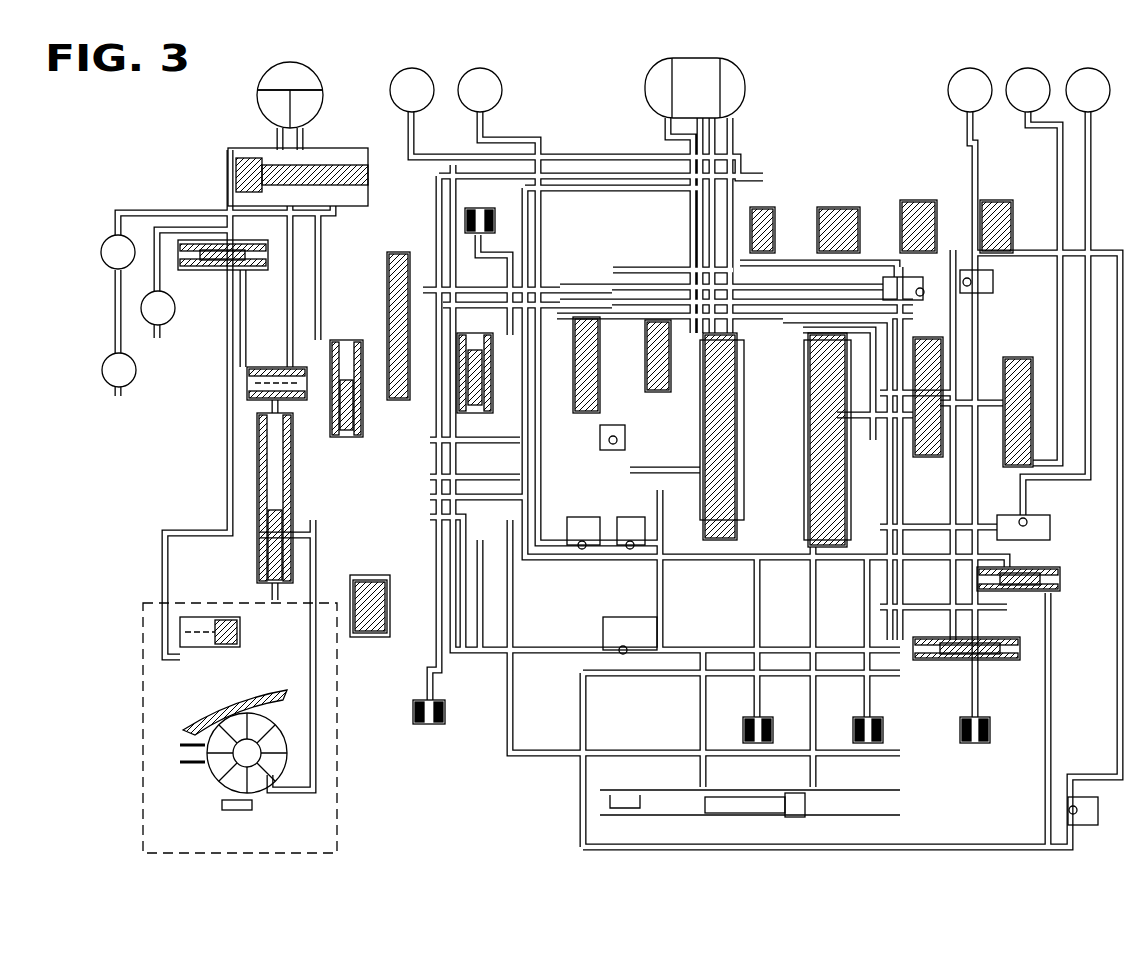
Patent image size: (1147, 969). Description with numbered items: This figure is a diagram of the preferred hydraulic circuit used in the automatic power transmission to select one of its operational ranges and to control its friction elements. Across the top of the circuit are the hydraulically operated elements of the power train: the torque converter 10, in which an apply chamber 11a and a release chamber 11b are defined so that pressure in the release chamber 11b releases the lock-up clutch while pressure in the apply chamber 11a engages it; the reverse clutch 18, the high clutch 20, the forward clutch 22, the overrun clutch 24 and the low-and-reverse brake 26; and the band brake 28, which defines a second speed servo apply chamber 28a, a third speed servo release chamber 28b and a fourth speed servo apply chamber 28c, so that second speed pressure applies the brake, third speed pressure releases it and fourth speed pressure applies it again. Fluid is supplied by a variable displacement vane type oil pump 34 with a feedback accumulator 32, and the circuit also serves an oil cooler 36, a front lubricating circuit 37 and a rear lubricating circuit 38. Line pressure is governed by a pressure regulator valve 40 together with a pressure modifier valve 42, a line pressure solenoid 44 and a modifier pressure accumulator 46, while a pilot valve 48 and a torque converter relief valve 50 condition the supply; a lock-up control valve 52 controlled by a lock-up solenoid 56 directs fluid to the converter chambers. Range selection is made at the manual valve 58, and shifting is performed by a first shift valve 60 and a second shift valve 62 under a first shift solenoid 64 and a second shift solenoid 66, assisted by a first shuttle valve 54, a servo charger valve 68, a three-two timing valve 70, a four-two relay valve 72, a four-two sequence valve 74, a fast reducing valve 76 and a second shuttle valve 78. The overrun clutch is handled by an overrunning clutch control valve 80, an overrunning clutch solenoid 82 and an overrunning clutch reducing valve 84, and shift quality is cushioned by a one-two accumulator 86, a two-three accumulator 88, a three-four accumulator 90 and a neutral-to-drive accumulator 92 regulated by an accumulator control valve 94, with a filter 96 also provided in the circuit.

The torque converter 10 is at (316, 63).
The apply chamber 11a is at (322, 108).
The release chamber 11b is at (258, 106).
The reverse clutch 18 is at (418, 70).
The high clutch 20 is at (485, 70).
The forward clutch 22 is at (980, 70).
The overrun clutch 24 is at (1038, 70).
The low-and-reverse brake 26 is at (1098, 70).
The band brake 28 is at (703, 69).
The second speed servo apply chamber 28a is at (645, 86).
The third speed servo release chamber 28b is at (695, 58).
The fourth speed servo apply chamber 28c is at (752, 88).
The feedback accumulator 32 is at (248, 640).
The variable displacement vane type oil pump 34 is at (217, 790).
The oil cooler 36 is at (100, 252).
The front lubricating circuit 37 is at (166, 322).
The rear lubricating circuit 38 is at (104, 362).
The pressure regulator valve 40 is at (255, 560).
The pressure modifier valve 42 is at (348, 340).
The line pressure solenoid 44 is at (410, 728).
The modifier pressure accumulator 46 is at (277, 365).
The pilot valve 48 is at (387, 622).
The torque converter relief valve 50 is at (258, 272).
The lock-up control valve 52 is at (365, 195).
The first shuttle valve 54 is at (583, 413).
The lock-up solenoid 56 is at (500, 222).
The manual valve 58 is at (830, 790).
The first shift valve 60 is at (808, 345).
The second shift valve 62 is at (745, 330).
The first shift solenoid 64 is at (885, 721).
The second shift solenoid 66 is at (775, 718).
The servo charger valve 68 is at (388, 280).
The 3-2 timing valve 70 is at (663, 395).
The 4-2 relay valve 72 is at (813, 542).
The 4-2 sequence valve 74 is at (742, 517).
The fast reducing valve 76 is at (1055, 565).
The second shuttle valve 78 is at (960, 662).
The overrunning clutch control valve 80 is at (950, 435).
The overrunning clutch solenoid 82 is at (976, 745).
The overrunning clutch reducing valve 84 is at (1022, 355).
The 1-2 accumulator 86 is at (852, 212).
The 2-3 accumulator 88 is at (930, 205).
The 3-4 accumulator 90 is at (778, 225).
The N-D accumulator 92 is at (1005, 205).
The accumulator control valve 94 is at (478, 333).
The filter 96 is at (395, 585).